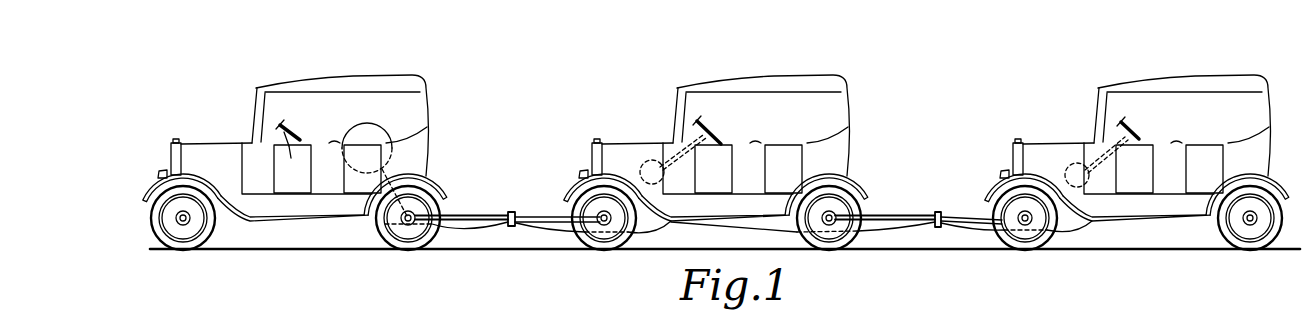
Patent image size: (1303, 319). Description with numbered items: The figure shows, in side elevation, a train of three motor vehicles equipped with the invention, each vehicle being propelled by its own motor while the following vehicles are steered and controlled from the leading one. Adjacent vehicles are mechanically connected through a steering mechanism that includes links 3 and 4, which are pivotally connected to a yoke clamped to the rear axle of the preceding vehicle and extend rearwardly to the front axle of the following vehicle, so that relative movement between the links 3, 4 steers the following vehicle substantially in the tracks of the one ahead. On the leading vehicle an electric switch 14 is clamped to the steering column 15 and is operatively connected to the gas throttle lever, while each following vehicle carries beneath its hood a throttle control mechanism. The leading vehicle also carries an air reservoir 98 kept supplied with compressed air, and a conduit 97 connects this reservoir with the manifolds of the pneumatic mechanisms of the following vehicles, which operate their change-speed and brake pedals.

The link 3 is at (480, 214).
The link 4 is at (537, 230).
The electric switch 14 is at (281, 124).
The steering column 15 is at (300, 138).
The conduit 97 is at (693, 229).
The air reservoir 98 is at (381, 127).